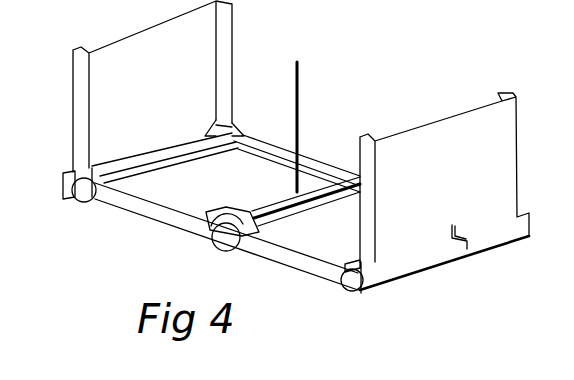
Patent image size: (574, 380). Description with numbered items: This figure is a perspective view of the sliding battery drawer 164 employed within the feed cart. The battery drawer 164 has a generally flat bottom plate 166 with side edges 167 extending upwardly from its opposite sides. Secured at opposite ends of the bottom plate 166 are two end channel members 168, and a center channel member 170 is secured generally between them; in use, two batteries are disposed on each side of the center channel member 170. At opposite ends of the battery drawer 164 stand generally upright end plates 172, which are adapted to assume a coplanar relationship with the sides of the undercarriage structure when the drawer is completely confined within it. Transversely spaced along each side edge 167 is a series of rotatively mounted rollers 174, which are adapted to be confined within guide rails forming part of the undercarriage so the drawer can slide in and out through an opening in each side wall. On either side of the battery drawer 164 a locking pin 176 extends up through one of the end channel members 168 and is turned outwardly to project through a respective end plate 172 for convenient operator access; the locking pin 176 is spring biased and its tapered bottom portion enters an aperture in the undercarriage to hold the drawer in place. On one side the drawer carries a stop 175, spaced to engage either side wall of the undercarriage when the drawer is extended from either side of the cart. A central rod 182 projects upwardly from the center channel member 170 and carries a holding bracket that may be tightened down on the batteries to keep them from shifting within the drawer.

The battery drawer 164 is at (402, 80).
The bottom plate 166 is at (226, 201).
The side edges 167 is at (305, 163).
The end channel members 168 is at (204, 136).
The center channel member 170 is at (368, 176).
The end plates 172 is at (301, 145).
The rollers 174 is at (80, 204).
The stop 175 is at (213, 216).
The locking pin 176 is at (453, 245).
The central rod 182 is at (299, 99).